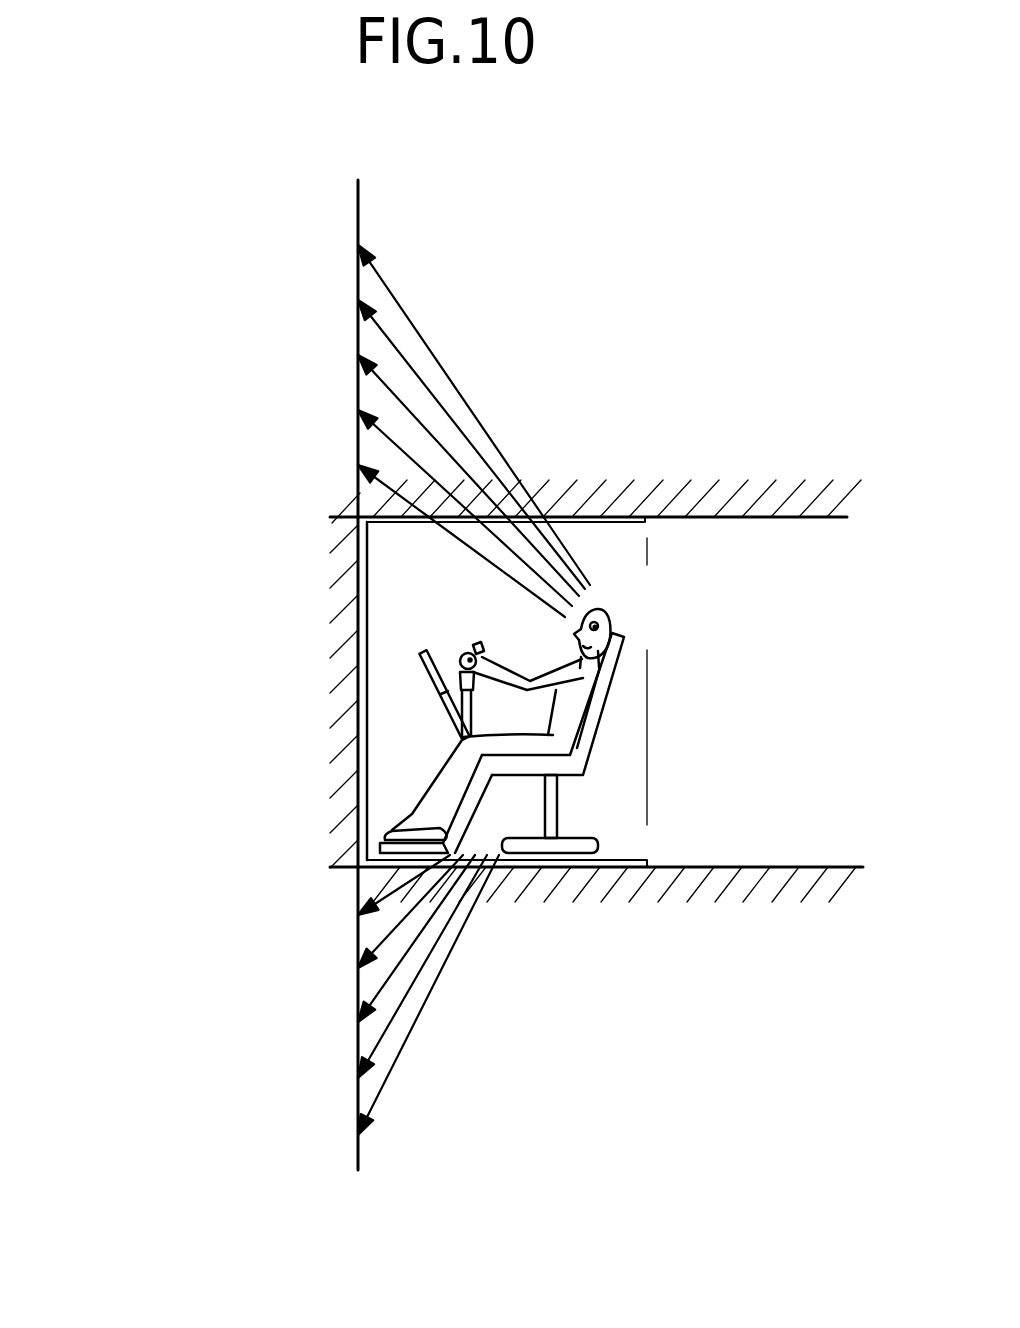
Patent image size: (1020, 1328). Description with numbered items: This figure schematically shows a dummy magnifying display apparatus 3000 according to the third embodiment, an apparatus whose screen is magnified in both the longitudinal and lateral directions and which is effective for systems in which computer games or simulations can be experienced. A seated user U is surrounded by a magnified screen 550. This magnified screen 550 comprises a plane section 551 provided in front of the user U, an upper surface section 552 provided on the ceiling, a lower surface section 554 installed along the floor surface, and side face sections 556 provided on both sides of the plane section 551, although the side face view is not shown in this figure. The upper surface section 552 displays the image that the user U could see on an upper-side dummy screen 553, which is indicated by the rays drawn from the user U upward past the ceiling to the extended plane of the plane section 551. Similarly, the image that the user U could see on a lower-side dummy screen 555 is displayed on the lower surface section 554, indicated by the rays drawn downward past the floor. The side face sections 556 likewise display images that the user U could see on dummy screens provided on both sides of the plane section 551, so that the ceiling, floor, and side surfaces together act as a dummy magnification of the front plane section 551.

The dummy magnifying display apparatus 3000 is at (150, 661).
The magnified screen 550 is at (300, 736).
The plane section 551 is at (357, 578).
The upper surface section 552 is at (357, 488).
The upper-side dummy screen 553 is at (357, 327).
The lower surface section 554 is at (358, 886).
The lower-side dummy screen 555 is at (358, 987).
The side face sections 556 is at (608, 545).
The user U is at (617, 618).